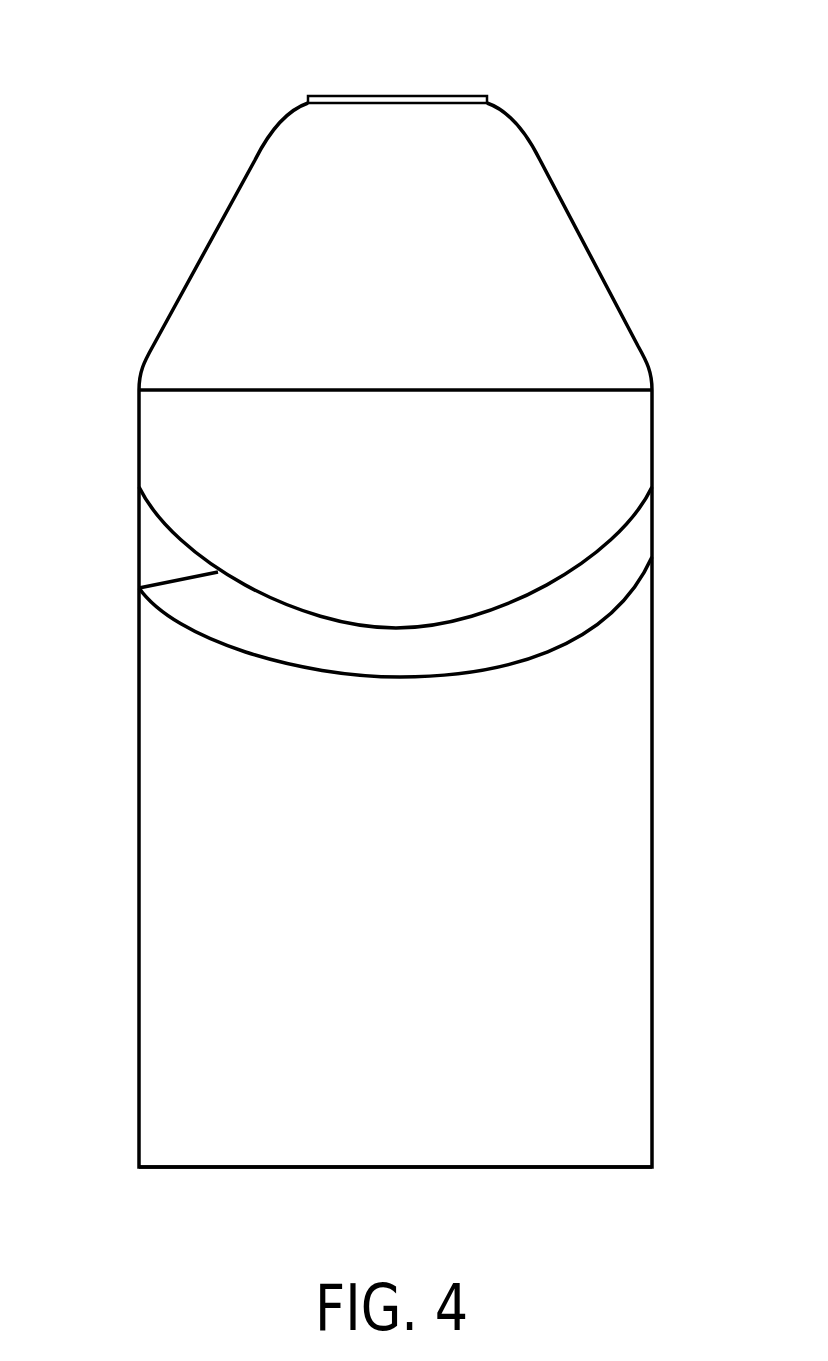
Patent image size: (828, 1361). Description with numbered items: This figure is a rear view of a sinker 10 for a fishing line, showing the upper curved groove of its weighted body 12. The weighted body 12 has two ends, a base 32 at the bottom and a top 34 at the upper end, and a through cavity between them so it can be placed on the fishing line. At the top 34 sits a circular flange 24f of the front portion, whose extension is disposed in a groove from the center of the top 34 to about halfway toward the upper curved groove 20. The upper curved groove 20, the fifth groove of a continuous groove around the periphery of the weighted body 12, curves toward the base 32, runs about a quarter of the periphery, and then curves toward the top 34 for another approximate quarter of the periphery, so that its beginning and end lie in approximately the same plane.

The sinker 10 is at (112, 108).
The weighted body 12 is at (158, 910).
The upper curved groove 20 is at (627, 556).
The circular flange 24f is at (381, 96).
The base 32 is at (533, 1170).
The top 34 is at (507, 111).